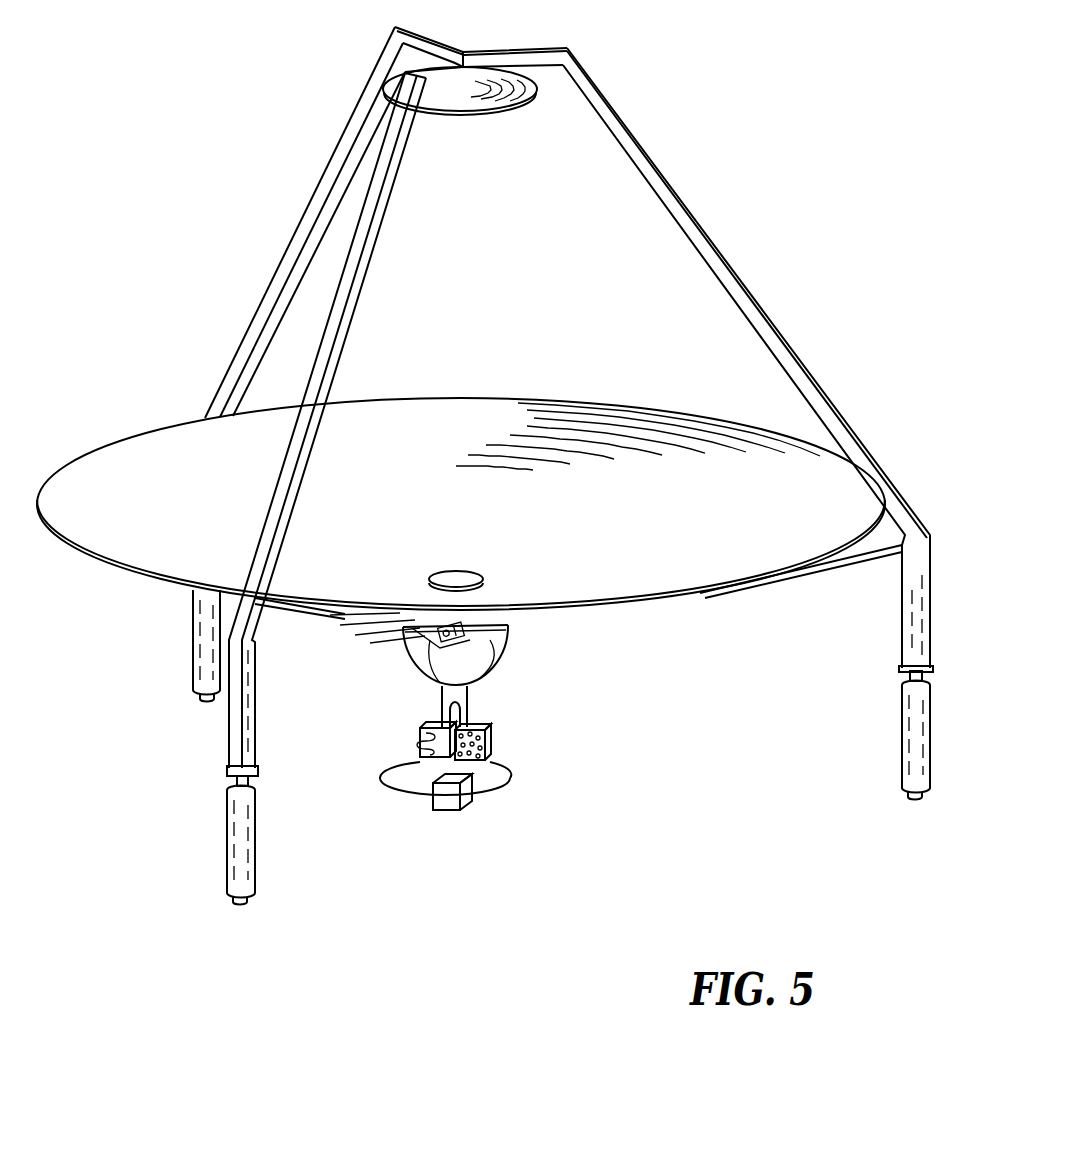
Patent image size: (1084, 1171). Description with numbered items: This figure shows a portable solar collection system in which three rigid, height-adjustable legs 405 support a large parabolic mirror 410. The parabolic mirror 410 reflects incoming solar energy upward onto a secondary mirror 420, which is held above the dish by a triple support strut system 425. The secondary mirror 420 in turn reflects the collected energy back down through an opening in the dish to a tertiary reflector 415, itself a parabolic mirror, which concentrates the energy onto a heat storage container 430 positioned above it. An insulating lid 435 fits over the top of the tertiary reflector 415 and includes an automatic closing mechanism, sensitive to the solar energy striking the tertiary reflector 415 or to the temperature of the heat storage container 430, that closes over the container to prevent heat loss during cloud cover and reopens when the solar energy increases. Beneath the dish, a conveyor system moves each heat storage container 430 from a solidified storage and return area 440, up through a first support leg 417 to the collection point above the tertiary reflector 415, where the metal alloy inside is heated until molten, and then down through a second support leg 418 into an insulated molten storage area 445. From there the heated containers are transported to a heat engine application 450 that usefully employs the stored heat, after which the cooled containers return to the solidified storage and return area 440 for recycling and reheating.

The legs 405 is at (192, 692).
The parabolic mirror 410 is at (470, 392).
The tertiary reflector 415 is at (500, 628).
The first support leg 417 is at (430, 712).
The second support leg 418 is at (487, 712).
The secondary mirror 420 is at (477, 110).
The triple support strut system 425 is at (325, 332).
The heat storage container 430 is at (440, 630).
The insulating lid 435 is at (495, 668).
The solidified storage and return area 440 is at (420, 740).
The molten storage area 445 is at (492, 746).
The heat engine application 450 is at (448, 812).